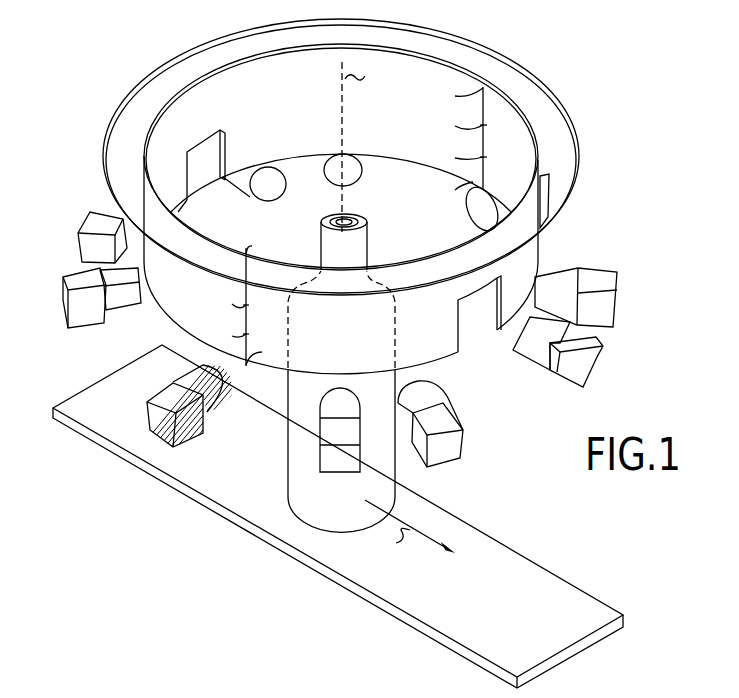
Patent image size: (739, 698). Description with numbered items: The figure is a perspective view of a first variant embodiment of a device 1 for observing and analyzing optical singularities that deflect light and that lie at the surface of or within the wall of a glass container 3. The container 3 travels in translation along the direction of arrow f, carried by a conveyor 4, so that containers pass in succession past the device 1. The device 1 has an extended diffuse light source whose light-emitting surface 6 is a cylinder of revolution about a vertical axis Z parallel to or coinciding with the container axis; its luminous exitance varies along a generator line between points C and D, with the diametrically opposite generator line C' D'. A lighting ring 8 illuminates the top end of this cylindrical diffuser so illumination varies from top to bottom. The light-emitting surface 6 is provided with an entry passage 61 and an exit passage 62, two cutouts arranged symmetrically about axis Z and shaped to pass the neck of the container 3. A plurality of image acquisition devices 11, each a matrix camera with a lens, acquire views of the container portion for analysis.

The device 1 is at (575, 74).
The glass container 3 is at (288, 462).
The conveyor 4 is at (578, 598).
The light-emitting surface 6 is at (172, 307).
The lighting ring 8 is at (468, 62).
The image acquisition device 11 is at (88, 247).
The entry passage 61 is at (190, 173).
The exit passage 62 is at (458, 338).